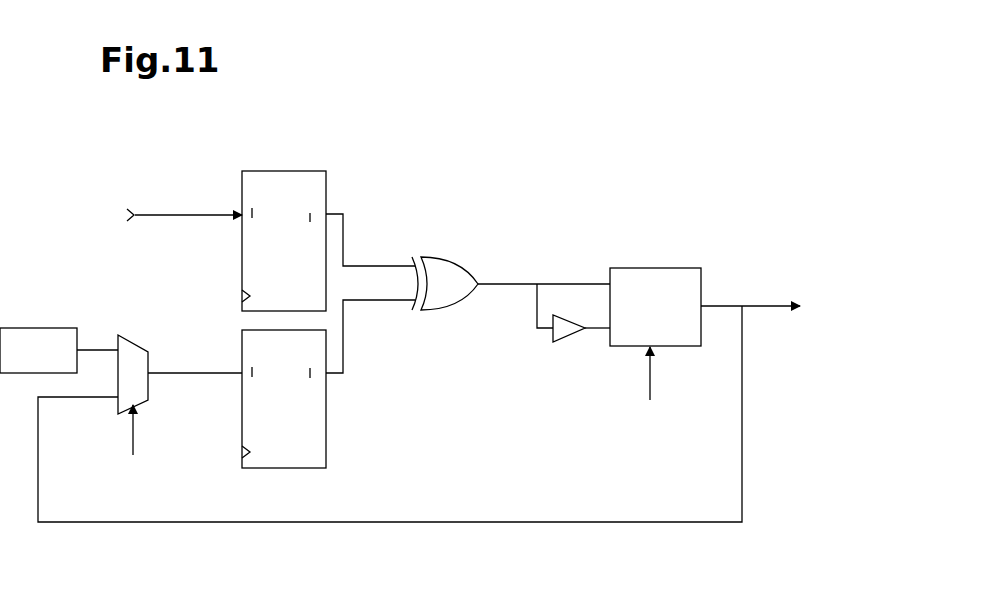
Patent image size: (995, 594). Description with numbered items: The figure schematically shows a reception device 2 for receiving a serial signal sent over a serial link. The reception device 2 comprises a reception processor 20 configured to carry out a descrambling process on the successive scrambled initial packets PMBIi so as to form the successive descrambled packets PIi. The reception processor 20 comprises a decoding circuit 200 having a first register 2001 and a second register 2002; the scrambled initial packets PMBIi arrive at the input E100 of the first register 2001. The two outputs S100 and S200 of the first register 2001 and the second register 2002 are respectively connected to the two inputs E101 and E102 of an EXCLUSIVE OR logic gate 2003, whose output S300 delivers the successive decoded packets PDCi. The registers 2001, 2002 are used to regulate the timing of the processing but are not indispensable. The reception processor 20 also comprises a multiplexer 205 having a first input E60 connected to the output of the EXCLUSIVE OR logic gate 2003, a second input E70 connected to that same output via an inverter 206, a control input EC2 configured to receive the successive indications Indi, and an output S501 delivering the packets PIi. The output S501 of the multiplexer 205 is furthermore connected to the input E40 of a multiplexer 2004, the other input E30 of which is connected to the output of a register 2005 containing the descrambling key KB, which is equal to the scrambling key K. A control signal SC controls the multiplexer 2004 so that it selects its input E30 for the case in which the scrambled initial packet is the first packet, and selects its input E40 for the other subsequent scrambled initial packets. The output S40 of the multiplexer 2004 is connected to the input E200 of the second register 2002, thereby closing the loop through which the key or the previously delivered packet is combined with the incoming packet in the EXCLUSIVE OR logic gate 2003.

The reception device 2 is at (528, 103).
The reception processor 20 is at (563, 140).
The decoding circuit 200 is at (347, 128).
The first register 2001 is at (282, 171).
The second register 2002 is at (326, 448).
The EXCLUSIVE OR logic gate 2003 is at (447, 262).
The multiplexer 2004 is at (128, 340).
The register 2005 is at (34, 328).
The multiplexer 205 is at (672, 268).
The inverter 206 is at (562, 344).
The input of the first register E100 is at (240, 215).
The output of the first register S100 is at (326, 214).
The first input of the EXCLUSIVE OR logic gate E101 is at (396, 270).
The second input of the EXCLUSIVE OR logic gate E102 is at (394, 300).
The output of the EXCLUSIVE OR logic gate S300 is at (478, 282).
The output of the second register S200 is at (326, 373).
The input of the second register E200 is at (214, 367).
The output of the multiplexer S40 is at (150, 372).
The input of the multiplexer E30 is at (98, 350).
The input of the multiplexer E40 is at (100, 392).
The first input of the multiplexer E60 is at (602, 282).
The second input of the multiplexer E70 is at (598, 326).
The output of the multiplexer S501 is at (705, 302).
The control input of the multiplexer EC2 is at (655, 347).
The decoded packets PDCi is at (497, 287).
The descrambled packets PIi is at (763, 308).
The indications Indi is at (652, 391).
The control signal SC is at (129, 445).
The scrambled initial packets PMBIi is at (81, 216).